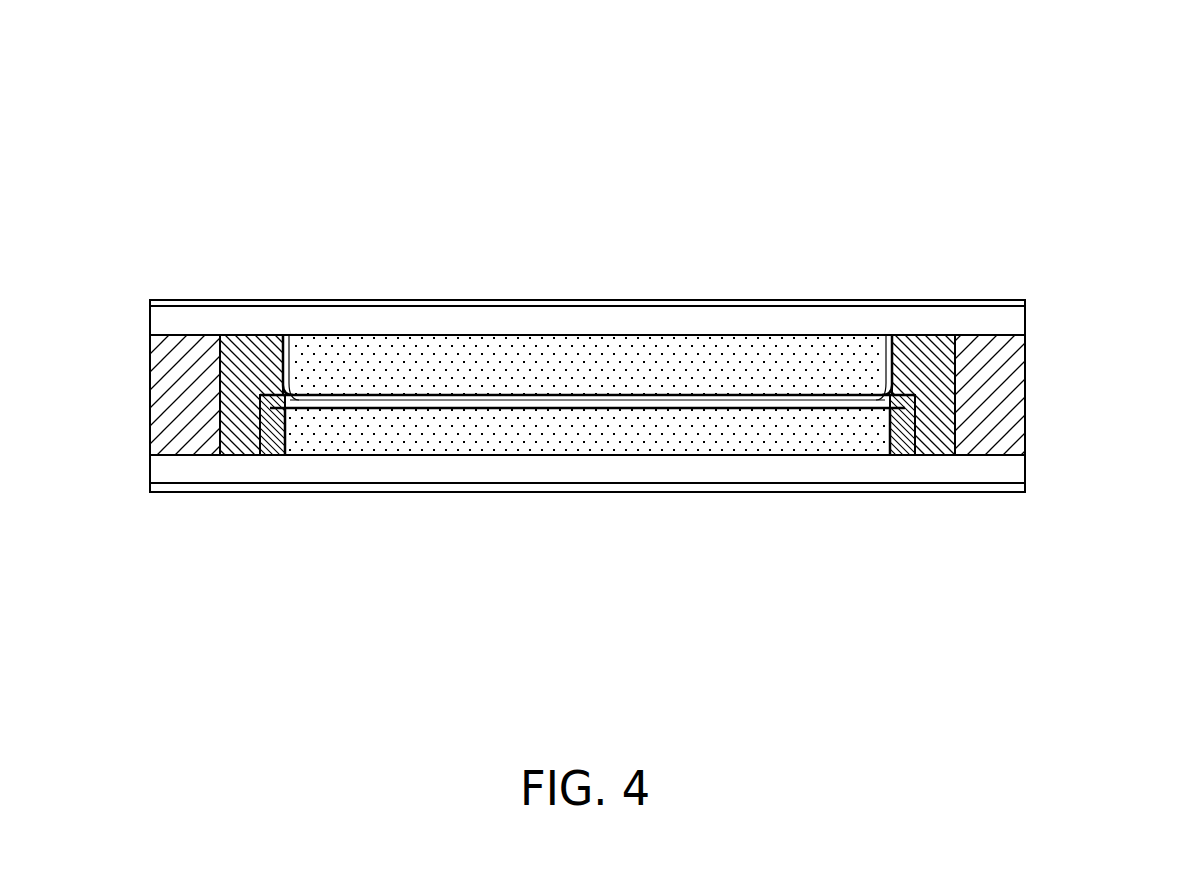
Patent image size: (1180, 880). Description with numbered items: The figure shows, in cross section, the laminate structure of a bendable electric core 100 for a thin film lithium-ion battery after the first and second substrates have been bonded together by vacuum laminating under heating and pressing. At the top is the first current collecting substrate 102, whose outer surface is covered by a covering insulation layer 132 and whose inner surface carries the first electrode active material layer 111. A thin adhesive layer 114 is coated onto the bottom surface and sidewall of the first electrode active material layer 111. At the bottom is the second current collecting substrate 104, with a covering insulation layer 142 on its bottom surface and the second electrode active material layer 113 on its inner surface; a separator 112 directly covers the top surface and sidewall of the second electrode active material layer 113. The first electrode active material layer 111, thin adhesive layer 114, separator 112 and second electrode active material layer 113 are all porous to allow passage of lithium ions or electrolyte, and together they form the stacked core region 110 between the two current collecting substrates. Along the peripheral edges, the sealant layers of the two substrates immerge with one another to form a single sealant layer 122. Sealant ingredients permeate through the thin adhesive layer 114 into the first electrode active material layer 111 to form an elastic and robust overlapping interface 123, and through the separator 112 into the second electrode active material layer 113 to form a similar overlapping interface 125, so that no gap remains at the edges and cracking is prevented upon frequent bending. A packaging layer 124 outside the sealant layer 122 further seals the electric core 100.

The electric core 100 is at (1032, 127).
The first current collecting substrate 102 is at (590, 320).
The second current collecting substrate 104 is at (686, 467).
The display panel stack 110 is at (587, 486).
The first electrode active material layer 111 is at (440, 378).
The separator 112 is at (496, 408).
The second electrode active material layer 113 is at (395, 556).
The thin adhesive layer 114 is at (388, 395).
The sealant layer 122 is at (246, 440).
The elastic and robust overlapping interface 123 is at (286, 385).
The packaging layer 124 is at (177, 422).
The elastic and robust overlapping interface 125 is at (275, 435).
The covering insulation layer 132 is at (717, 300).
The covering insulation layer 142 is at (805, 492).